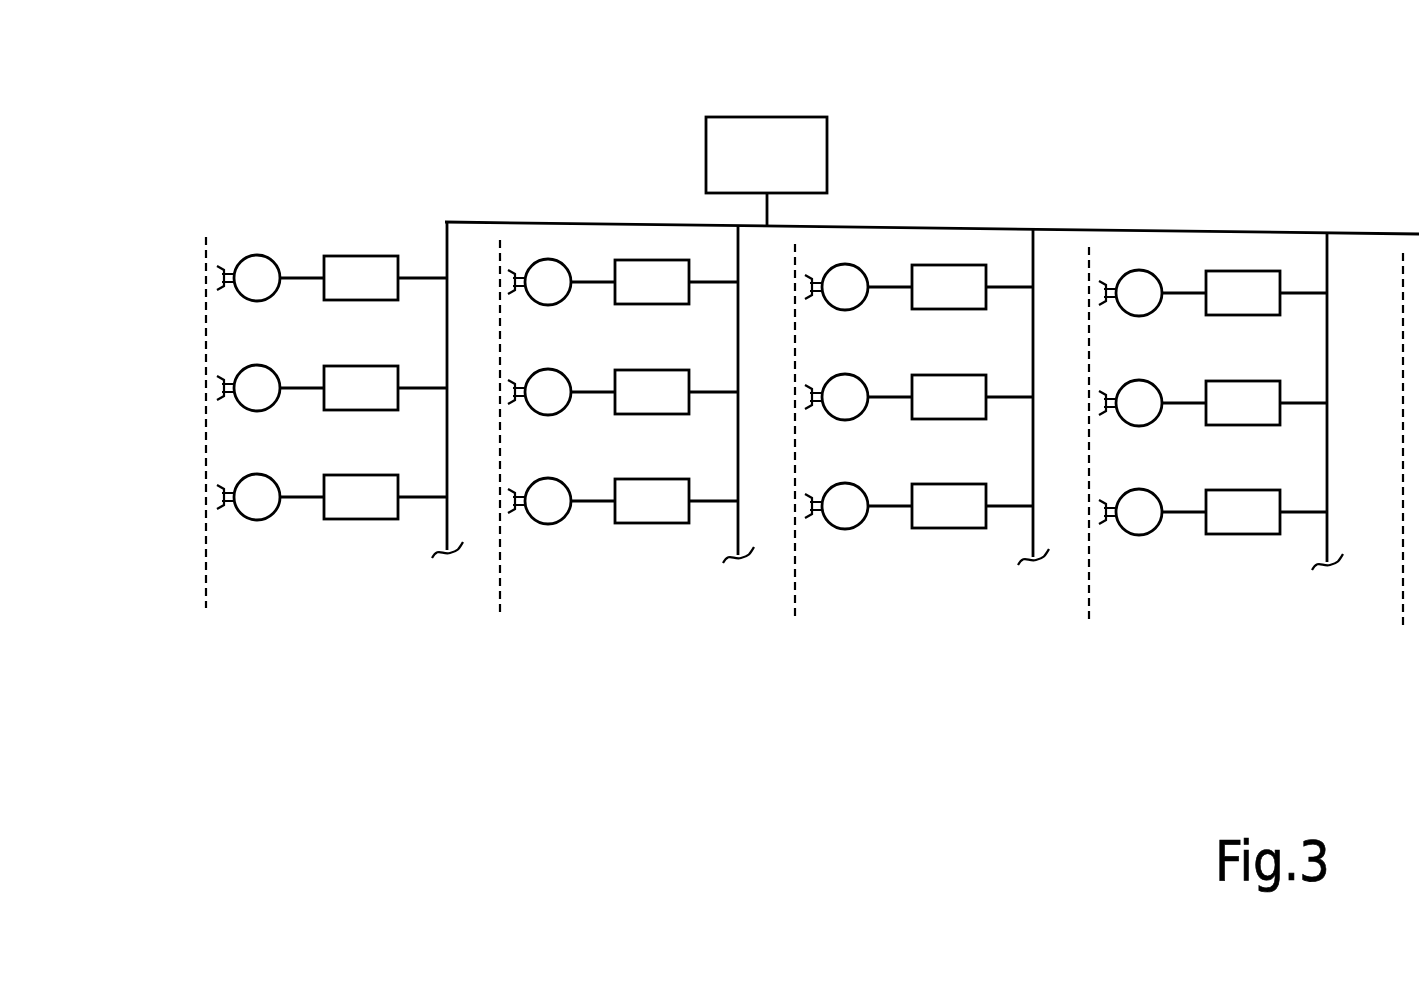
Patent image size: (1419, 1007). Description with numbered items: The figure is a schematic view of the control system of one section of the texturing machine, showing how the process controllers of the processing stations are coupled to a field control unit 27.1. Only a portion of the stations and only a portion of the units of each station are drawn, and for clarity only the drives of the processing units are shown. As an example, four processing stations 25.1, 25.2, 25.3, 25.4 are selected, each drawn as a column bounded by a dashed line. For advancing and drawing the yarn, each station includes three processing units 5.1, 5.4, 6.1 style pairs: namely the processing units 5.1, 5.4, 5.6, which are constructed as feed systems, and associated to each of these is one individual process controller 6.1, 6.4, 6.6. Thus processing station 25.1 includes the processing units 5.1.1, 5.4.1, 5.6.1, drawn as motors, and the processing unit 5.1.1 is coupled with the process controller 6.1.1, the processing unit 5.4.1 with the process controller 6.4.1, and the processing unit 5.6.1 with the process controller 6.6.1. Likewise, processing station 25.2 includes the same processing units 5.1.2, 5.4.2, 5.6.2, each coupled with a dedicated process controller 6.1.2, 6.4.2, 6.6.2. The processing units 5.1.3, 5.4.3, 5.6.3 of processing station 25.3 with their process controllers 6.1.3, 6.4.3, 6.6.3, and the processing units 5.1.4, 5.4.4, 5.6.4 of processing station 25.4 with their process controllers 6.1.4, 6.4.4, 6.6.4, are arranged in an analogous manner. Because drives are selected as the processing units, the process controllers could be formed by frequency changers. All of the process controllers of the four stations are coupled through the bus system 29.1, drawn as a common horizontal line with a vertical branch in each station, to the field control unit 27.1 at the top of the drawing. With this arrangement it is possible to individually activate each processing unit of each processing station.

The field control unit 27.1 is at (801, 137).
The bus system 29.1 is at (857, 225).
The processing station 25.1 is at (362, 655).
The processing station 25.2 is at (672, 660).
The processing station 25.3 is at (970, 666).
The processing station 25.4 is at (1258, 668).
The processing unit 5.1 is at (230, 262).
The processing unit 5.4 is at (230, 372).
The processing unit 5.6 is at (230, 481).
The process controller 6.1 is at (318, 298).
The process controller 6.4 is at (318, 407).
The process controller 6.6 is at (318, 515).
The processing unit 5.1.1 is at (270, 262).
The processing unit 5.4.1 is at (270, 372).
The processing unit 5.6.1 is at (270, 481).
The process controller 6.1.1 is at (385, 278).
The process controller 6.4.1 is at (385, 388).
The process controller 6.6.1 is at (385, 497).
The processing unit 5.1.2 is at (561, 266).
The processing unit 5.4.2 is at (561, 376).
The processing unit 5.6.2 is at (561, 485).
The process controller 6.1.2 is at (676, 282).
The process controller 6.4.2 is at (676, 392).
The process controller 6.6.2 is at (676, 501).
The processing unit 5.1.3 is at (858, 271).
The processing unit 5.4.3 is at (858, 381).
The processing unit 5.6.3 is at (858, 490).
The process controller 6.1.3 is at (972, 287).
The process controller 6.4.3 is at (972, 397).
The process controller 6.6.3 is at (972, 506).
The processing unit 5.1.4 is at (1152, 277).
The processing unit 5.4.4 is at (1152, 387).
The processing unit 5.6.4 is at (1152, 496).
The process controller 6.1.4 is at (1266, 293).
The process controller 6.4.4 is at (1266, 403).
The process controller 6.6.4 is at (1266, 512).